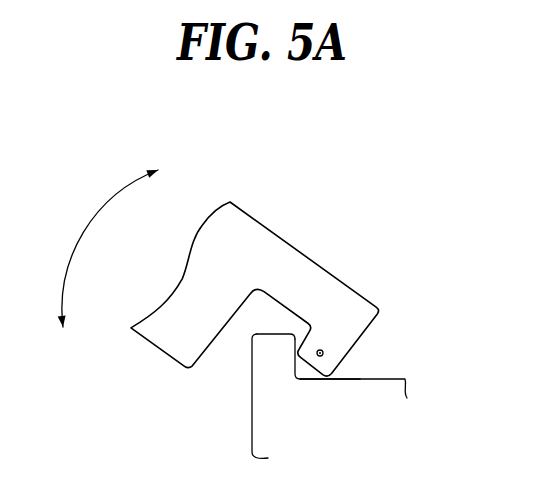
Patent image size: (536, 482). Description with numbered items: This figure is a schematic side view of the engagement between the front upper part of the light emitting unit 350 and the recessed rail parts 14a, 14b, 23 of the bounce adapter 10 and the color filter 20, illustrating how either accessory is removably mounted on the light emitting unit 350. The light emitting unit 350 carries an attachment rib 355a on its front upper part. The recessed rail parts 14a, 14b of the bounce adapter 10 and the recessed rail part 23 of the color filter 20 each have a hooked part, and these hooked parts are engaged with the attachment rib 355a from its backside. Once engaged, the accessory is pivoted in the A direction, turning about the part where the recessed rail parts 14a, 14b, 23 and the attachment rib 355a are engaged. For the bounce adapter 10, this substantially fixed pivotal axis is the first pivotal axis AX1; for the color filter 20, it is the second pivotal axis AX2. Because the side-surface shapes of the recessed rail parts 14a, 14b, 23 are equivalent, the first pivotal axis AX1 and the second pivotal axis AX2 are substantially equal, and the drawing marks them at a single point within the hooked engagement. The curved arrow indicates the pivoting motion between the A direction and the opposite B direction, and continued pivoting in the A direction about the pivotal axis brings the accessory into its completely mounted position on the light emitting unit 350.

The bounce adapter 10 is at (257, 294).
The color filter 20 is at (289, 230).
The first pivotal axis AX1 is at (402, 299).
The second pivotal axis AX2 is at (321, 349).
The light emitting unit 350 is at (380, 370).
The attachment rib 355a is at (270, 334).
The recessed rail part 14a is at (354, 418).
The recessed rail part 14b is at (354, 418).
The recessed rail part 23 is at (301, 380).
The A direction A is at (120, 255).
The rotation direction B is at (120, 255).